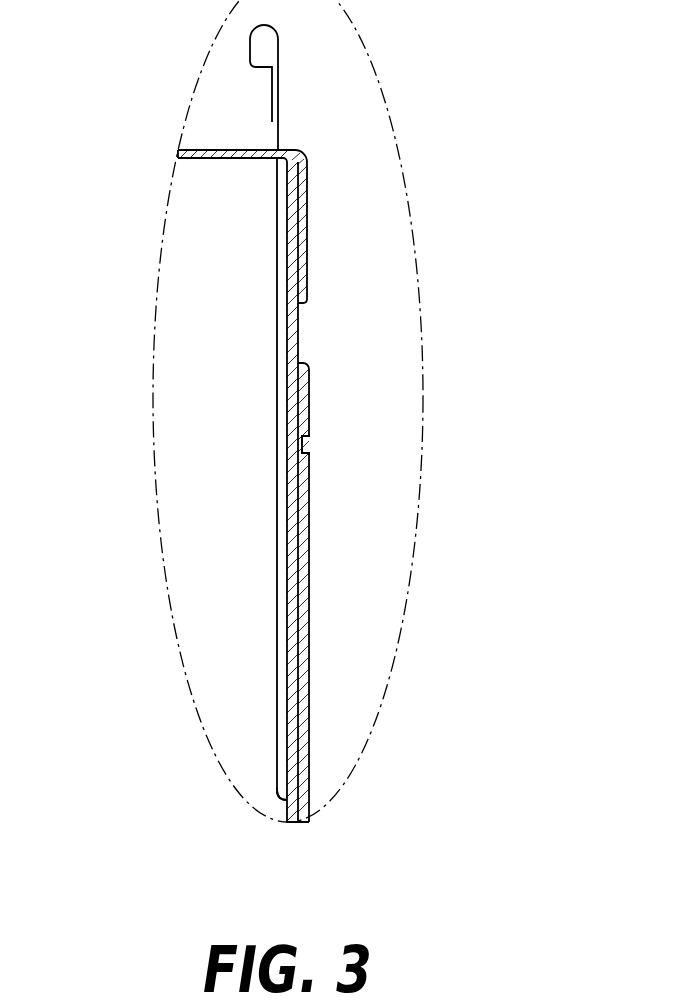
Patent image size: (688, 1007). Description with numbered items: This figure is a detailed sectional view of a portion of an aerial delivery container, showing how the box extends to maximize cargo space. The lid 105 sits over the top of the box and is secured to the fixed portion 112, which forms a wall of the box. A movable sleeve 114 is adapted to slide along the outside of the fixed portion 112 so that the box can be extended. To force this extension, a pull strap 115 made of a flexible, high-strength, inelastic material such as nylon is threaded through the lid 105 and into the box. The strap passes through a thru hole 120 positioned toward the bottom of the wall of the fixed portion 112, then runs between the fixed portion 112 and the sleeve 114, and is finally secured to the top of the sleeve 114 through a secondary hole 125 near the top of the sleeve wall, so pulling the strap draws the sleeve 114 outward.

The lid 105 is at (307, 203).
The fixed portion 112 is at (175, 380).
The movable sleeve 114 is at (310, 593).
The pull strap 115 is at (280, 93).
The thru hole 120 is at (277, 797).
The secondary hole 125 is at (305, 442).